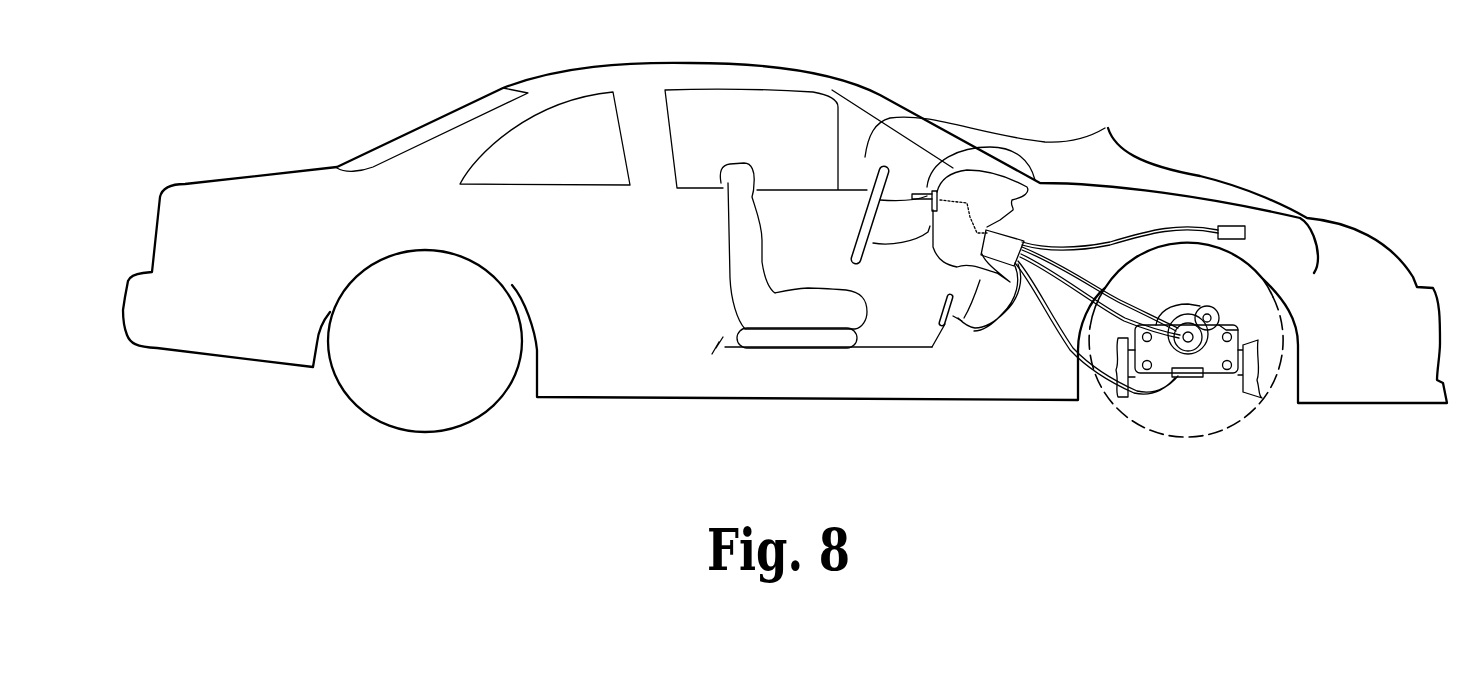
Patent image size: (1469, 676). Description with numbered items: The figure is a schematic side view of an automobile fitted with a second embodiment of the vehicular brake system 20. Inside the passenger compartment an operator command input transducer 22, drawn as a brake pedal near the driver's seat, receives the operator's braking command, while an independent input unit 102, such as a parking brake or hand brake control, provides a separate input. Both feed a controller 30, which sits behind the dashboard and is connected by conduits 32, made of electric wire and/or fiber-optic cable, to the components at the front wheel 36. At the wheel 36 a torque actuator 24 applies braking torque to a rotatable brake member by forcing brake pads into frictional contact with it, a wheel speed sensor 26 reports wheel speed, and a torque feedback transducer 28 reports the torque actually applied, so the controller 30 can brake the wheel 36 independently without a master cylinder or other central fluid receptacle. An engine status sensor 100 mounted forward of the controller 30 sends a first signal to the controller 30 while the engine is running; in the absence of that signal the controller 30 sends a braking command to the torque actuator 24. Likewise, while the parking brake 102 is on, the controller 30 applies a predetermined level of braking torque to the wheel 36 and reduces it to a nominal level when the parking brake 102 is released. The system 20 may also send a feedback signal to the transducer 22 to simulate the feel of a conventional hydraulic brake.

The vehicular brake system 20 is at (1105, 128).
The operator command input transducer 22 is at (937, 317).
The torque actuator 24 is at (1183, 318).
The wheel speed sensor 26 is at (1214, 306).
The torque feedback transducer 28 is at (1210, 374).
The controller 30 is at (1007, 243).
The conduits 32 is at (1078, 252).
The wheel 36 is at (1150, 424).
The engine status sensor 100 is at (1237, 239).
The independent input unit 102 is at (1029, 166).